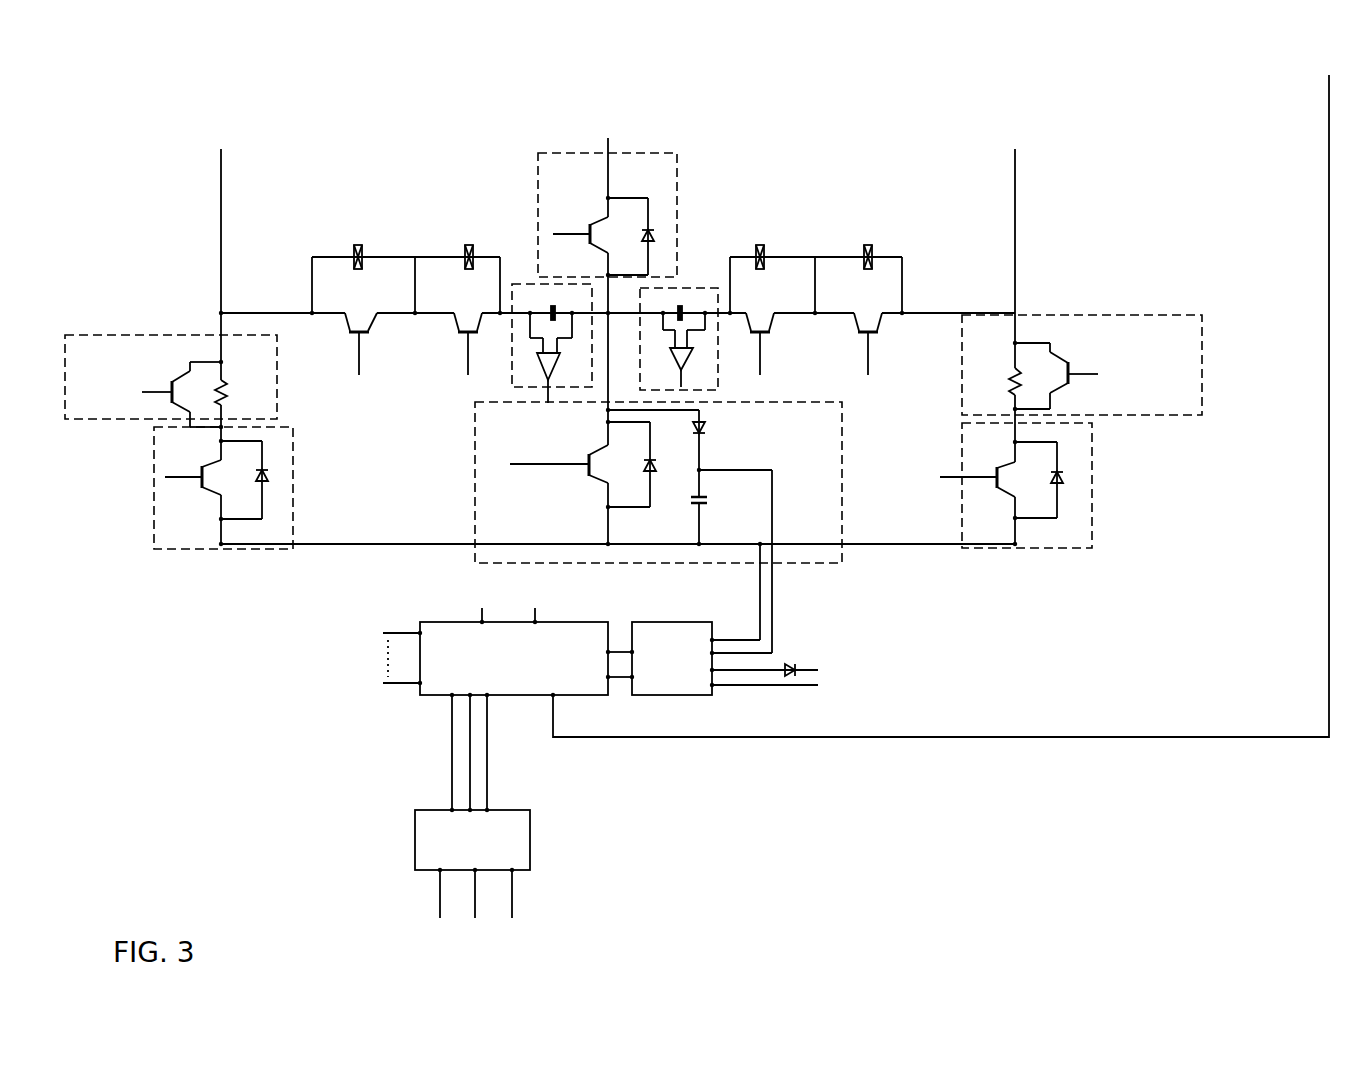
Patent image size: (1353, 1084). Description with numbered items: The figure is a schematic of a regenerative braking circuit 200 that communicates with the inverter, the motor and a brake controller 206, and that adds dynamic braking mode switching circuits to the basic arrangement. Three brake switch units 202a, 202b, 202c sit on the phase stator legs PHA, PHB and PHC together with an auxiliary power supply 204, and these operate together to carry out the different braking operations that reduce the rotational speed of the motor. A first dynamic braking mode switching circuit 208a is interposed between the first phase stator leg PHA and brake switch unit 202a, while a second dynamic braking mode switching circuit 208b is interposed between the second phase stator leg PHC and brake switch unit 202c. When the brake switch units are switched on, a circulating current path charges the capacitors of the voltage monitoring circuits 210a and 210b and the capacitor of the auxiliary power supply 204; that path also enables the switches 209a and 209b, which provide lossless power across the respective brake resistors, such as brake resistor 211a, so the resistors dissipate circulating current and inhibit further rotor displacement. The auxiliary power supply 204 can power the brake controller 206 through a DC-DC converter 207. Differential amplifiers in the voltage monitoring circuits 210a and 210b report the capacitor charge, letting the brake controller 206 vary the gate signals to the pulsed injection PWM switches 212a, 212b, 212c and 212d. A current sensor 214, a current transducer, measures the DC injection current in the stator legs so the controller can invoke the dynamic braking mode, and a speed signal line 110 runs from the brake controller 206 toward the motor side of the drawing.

The regenerative braking circuit 200 is at (140, 127).
The brake switch unit 202a is at (150, 490).
The brake switch unit 202b is at (537, 167).
The brake switch unit 202c is at (1093, 490).
The auxiliary power supply 204 is at (473, 410).
The brake controller 206 is at (447, 620).
The DC-DC converter 207 is at (672, 625).
The first dynamic braking mode switching circuit 208a is at (152, 333).
The second dynamic braking mode switching circuit 208b is at (1130, 312).
The switch 209a is at (178, 382).
The switch 209b is at (1057, 357).
The voltage monitoring circuit 210a is at (527, 275).
The voltage monitoring circuit 210b is at (702, 282).
The brake resistor 211a is at (225, 385).
The pulsed injection PWM switch 212a is at (357, 334).
The pulsed injection PWM switch 212b is at (458, 333).
The pulsed injection PWM switch 212c is at (768, 332).
The pulsed injection PWM switch 212d is at (878, 332).
The current sensor 214 is at (532, 843).
The speed signal line to rotor position sensor 110 is at (1090, 730).